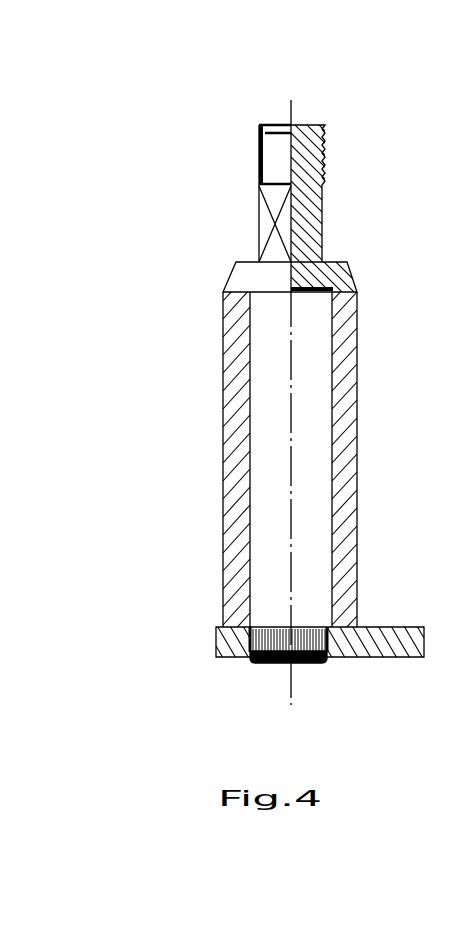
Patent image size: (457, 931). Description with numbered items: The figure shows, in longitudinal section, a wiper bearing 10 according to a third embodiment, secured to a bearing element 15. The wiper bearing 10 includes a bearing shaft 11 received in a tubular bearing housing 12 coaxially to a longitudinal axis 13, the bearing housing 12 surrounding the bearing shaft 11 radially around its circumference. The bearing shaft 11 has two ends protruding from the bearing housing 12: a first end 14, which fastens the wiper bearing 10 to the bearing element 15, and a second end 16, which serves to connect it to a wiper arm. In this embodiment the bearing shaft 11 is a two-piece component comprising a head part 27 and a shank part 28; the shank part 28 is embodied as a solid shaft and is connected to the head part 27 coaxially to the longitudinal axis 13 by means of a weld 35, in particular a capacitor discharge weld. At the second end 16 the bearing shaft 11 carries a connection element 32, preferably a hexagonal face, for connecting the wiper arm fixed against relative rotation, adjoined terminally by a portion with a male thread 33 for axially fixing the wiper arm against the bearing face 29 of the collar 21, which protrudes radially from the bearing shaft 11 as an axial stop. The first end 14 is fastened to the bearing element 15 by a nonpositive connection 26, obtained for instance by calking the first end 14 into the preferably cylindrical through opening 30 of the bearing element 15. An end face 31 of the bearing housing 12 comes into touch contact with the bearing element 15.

The wiper bearing 10 is at (220, 112).
The bearing shaft 11 is at (232, 457).
The bearing housing 12 is at (235, 517).
The longitudinal axis 13 is at (291, 385).
The first end 14 is at (316, 692).
The bearing element 15 is at (365, 647).
The second end 16 is at (234, 218).
The collar 21 is at (247, 280).
The nonpositive connection 26 is at (323, 662).
The head part 27 is at (252, 157).
The shank part 28 is at (265, 473).
The bearing face 29 is at (333, 262).
The through opening 30 is at (331, 692).
The end face 31 is at (336, 643).
The connection element 32 is at (273, 198).
The male thread 33 is at (262, 134).
The weld 35 is at (323, 280).